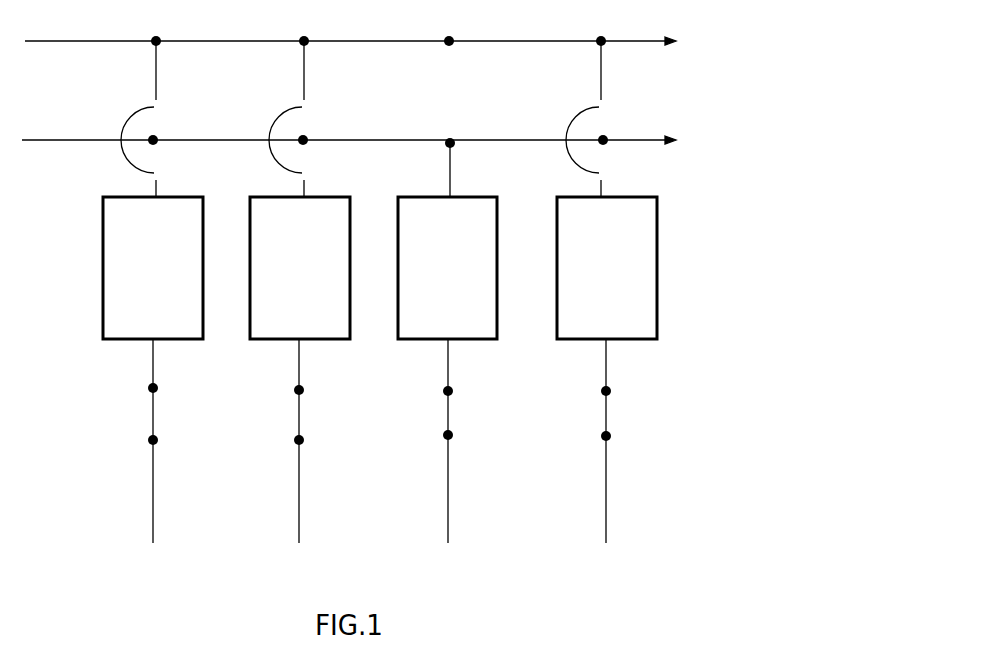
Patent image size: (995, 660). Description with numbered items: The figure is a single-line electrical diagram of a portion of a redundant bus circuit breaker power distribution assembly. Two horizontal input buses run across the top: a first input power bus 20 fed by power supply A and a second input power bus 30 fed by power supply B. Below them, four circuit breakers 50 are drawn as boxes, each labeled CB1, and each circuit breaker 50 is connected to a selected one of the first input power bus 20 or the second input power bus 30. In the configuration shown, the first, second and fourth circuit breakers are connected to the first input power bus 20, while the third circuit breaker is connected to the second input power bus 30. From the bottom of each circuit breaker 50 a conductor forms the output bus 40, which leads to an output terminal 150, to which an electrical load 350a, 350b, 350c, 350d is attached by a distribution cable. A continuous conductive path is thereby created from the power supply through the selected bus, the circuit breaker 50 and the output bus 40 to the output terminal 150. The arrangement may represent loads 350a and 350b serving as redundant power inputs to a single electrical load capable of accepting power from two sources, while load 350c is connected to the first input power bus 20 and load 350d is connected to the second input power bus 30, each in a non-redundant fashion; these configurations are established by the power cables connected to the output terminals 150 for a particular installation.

The first input power bus 20 is at (108, 42).
The second input power bus 30 is at (88, 143).
The circuit breaker 50 is at (380, 268).
The output bus 40 is at (150, 395).
The output terminal 150 is at (150, 443).
The electrical load 350a is at (153, 492).
The electrical load 350b is at (299, 488).
The electrical load 350c is at (448, 485).
The electrical load 350d is at (606, 484).